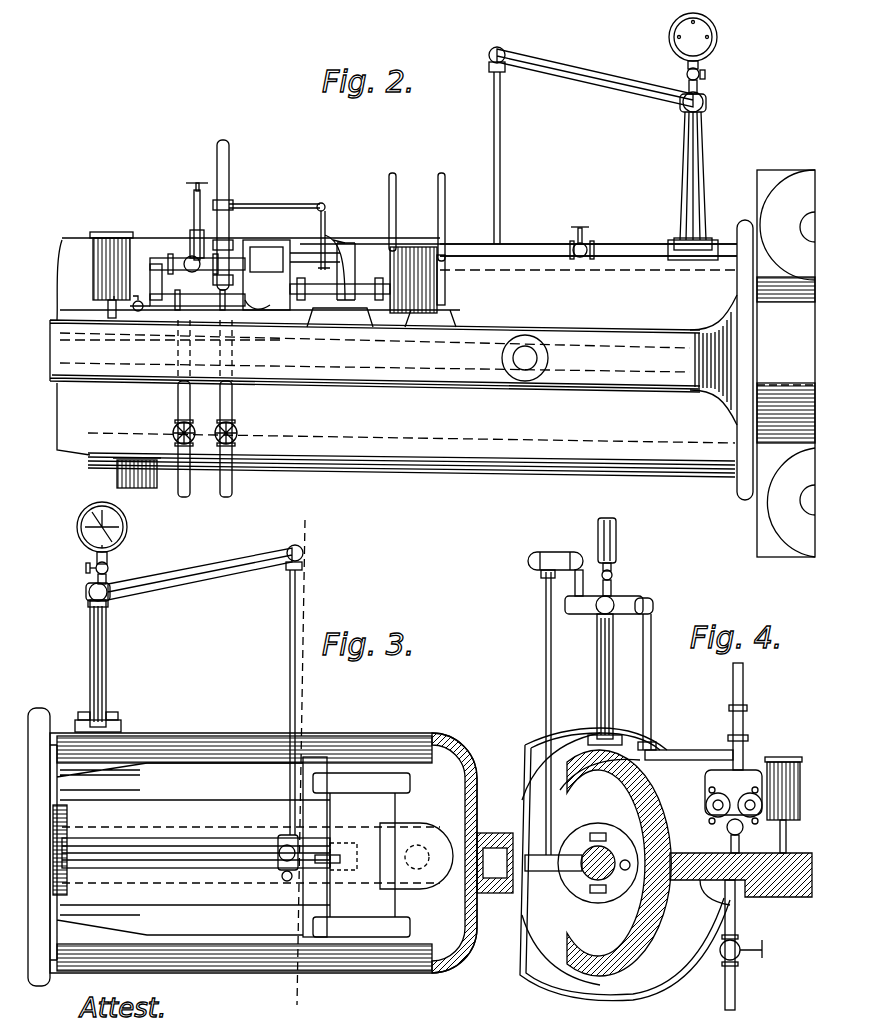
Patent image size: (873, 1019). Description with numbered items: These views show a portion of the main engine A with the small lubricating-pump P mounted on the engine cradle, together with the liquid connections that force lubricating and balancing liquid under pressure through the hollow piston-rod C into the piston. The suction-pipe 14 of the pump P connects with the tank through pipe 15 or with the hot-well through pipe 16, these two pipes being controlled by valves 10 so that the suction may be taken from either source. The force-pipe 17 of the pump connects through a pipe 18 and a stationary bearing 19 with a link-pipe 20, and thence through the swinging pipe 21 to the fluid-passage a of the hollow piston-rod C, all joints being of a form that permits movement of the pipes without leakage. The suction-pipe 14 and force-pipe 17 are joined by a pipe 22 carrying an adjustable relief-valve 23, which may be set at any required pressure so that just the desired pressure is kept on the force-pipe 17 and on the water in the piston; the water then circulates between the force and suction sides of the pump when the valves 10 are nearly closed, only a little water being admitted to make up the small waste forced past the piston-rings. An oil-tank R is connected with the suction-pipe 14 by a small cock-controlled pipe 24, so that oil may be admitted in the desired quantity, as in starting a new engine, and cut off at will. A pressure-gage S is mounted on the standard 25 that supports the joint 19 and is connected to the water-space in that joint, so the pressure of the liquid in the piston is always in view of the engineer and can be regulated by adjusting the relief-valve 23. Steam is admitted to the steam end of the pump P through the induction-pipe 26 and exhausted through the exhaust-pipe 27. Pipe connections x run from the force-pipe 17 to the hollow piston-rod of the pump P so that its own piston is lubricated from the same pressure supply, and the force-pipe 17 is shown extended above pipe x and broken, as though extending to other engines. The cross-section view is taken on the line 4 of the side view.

In FIG. 2, the valves 10 is at (172, 432).
In FIG. 4, the valves 10 is at (738, 958).
In FIG. 2, the suction-pipe 14 is at (260, 303).
In FIG. 2, the pipe 15 is at (178, 395).
In FIG. 4, the pipe 15 is at (738, 920).
In FIG. 2, the pipe 16 is at (232, 397).
In FIG. 2, the force-pipe 17 is at (229, 170).
In FIG. 4, the force-pipe 17 is at (745, 685).
In FIG. 2, the pipe 18 is at (643, 258).
In FIG. 4, the pipe 18 is at (658, 680).
In FIG. 2, the stationary bearing 19 is at (708, 107).
In FIG. 3, the stationary bearing 19 is at (92, 590).
In FIG. 4, the stationary bearing 19 is at (615, 600).
In FIG. 2, the link-pipe 20 is at (587, 72).
In FIG. 3, the link-pipe 20 is at (227, 570).
In FIG. 4, the link-pipe 20 is at (577, 582).
In FIG. 2, the swinging pipe 21 is at (502, 147).
In FIG. 3, the swinging pipe 21 is at (295, 622).
In FIG. 4, the swinging pipe 21 is at (546, 665).
In FIG. 2, the pipe 22 is at (160, 263).
In FIG. 4, the pipe 22 is at (723, 823).
In FIG. 2, the adjustable relief-valve 23 is at (195, 228).
In FIG. 4, the adjustable relief-valve 23 is at (742, 743).
In FIG. 2, the small pipe 24 is at (170, 347).
In FIG. 2, the standard 25 is at (703, 153).
In FIG. 3, the standard 25 is at (108, 647).
In FIG. 4, the standard 25 is at (600, 662).
In FIG. 2, the induction-pipe 26 is at (443, 217).
In FIG. 2, the exhaust-pipe 27 is at (390, 210).
In FIG. 3, the section line 4 is at (309, 766).
In FIG. 2, the pressure-gage S is at (720, 43).
In FIG. 3, the pressure-gage S is at (80, 533).
In FIG. 4, the pressure-gage S is at (622, 537).
In FIG. 2, the oil-tank R is at (93, 277).
In FIG. 4, the oil-tank R is at (810, 750).
In FIG. 2, the pump P is at (344, 283).
In FIG. 4, the pump P is at (720, 780).
In FIG. 2, the pipe connections x is at (292, 244).
In FIG. 3, the engine A is at (48, 720).
In FIG. 4, the engine A is at (678, 927).
In FIG. 3, the piston-rod C is at (177, 837).
In FIG. 4, the piston-rod C is at (570, 877).
In FIG. 3, the fluid-passage a is at (183, 853).
In FIG. 4, the fluid-passage a is at (617, 877).